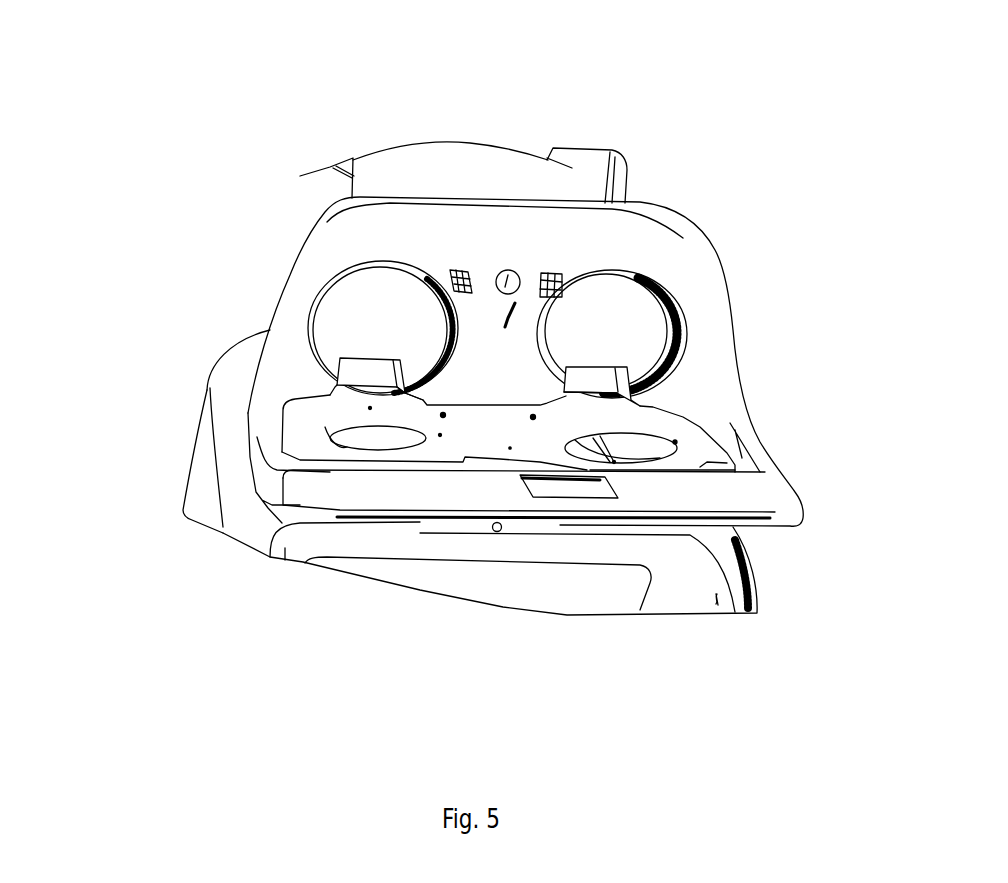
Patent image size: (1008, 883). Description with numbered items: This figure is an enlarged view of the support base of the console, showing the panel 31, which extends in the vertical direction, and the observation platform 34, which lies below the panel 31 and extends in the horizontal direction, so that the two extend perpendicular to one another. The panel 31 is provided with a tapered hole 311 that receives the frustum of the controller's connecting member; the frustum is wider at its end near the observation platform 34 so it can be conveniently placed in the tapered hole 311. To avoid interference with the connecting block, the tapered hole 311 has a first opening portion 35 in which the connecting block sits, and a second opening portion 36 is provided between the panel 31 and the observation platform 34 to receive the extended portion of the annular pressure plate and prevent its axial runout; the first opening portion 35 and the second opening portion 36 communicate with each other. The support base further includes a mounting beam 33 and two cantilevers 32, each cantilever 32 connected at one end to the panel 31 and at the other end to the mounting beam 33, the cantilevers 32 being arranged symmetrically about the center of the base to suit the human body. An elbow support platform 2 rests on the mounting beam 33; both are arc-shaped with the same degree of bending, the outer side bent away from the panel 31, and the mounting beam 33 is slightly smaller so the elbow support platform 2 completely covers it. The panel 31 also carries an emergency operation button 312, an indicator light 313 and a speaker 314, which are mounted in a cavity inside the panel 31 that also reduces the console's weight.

The elbow support platform 2 is at (503, 487).
The panel 31 is at (697, 357).
The tapered hole 311 is at (370, 315).
The emergency operation button 312 is at (506, 270).
The indicator light 313 is at (515, 312).
The speaker 314 is at (452, 267).
The cantilever 32 is at (288, 485).
The mounting beam 33 is at (377, 502).
The observation platform 34 is at (297, 435).
The first opening portion 35 is at (363, 370).
The second opening portion 36 is at (358, 393).